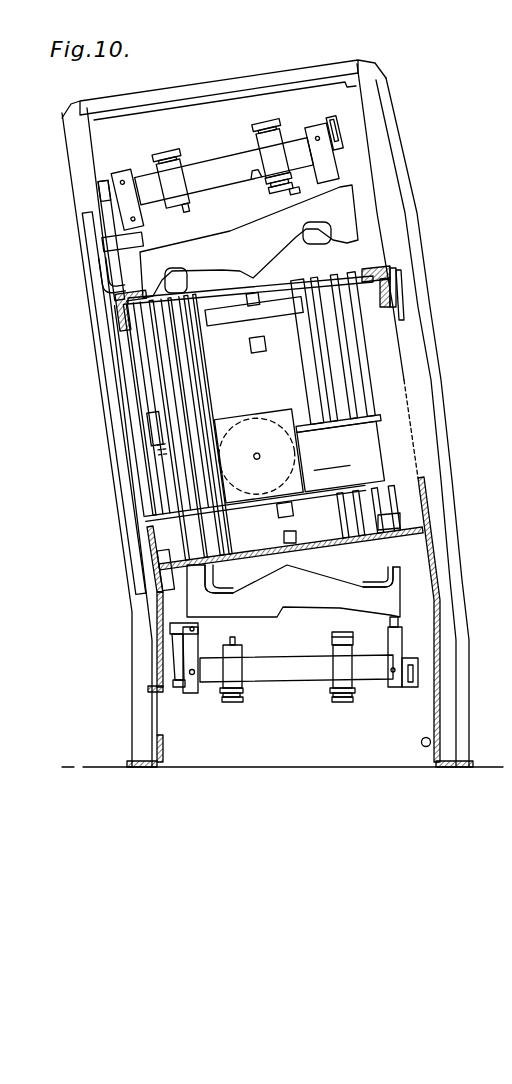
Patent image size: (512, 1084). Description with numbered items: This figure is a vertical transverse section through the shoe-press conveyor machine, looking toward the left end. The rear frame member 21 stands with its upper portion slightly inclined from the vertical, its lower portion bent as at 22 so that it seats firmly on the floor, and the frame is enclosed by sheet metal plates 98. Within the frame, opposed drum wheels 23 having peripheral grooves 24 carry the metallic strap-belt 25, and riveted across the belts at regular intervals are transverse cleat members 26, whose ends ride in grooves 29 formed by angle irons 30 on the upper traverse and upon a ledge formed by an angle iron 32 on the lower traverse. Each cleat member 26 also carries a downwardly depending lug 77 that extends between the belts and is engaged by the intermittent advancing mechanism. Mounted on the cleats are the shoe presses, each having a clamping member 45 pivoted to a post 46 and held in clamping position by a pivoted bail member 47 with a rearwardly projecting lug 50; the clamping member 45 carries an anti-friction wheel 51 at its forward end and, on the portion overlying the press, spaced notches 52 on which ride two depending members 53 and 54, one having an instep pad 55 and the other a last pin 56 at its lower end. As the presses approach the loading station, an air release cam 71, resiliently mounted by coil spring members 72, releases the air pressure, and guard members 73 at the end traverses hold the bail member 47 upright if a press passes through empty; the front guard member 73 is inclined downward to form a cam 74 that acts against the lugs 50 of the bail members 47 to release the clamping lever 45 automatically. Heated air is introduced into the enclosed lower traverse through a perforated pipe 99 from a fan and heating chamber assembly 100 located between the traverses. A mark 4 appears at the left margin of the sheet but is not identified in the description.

The sheet metal plates 98 is at (273, 90).
The depending member 54 is at (182, 162).
The clamping member 45 is at (208, 165).
The depending member 53 is at (272, 150).
The anti-friction wheel 51 is at (334, 116).
The post 46 is at (329, 161).
The bail member 47 is at (113, 180).
The cam 74 is at (100, 214).
The notches 52 is at (254, 170).
The instep pad 55 is at (286, 191).
The last pin 56 is at (181, 208).
The rear frame member 21 is at (375, 270).
The grooves 29 is at (391, 270).
The angle irons 30 is at (397, 285).
The strap-belt 25 is at (400, 300).
The drum wheels 23 is at (368, 345).
The peripheral grooves 24 is at (345, 366).
The cleat members 26 is at (232, 280).
The depending lug 77 is at (258, 292).
The coil spring members 72 is at (125, 297).
The air release cam 71 is at (118, 307).
The frame 4 is at (81, 487).
The fan and heating chamber assembly 100 is at (342, 453).
The angle iron 32 is at (430, 544).
The bent lower portion 22 is at (146, 604).
The rearwardly projecting lug 50 is at (173, 629).
The guard members 73 is at (173, 663).
The perforated pipe 99 is at (421, 742).